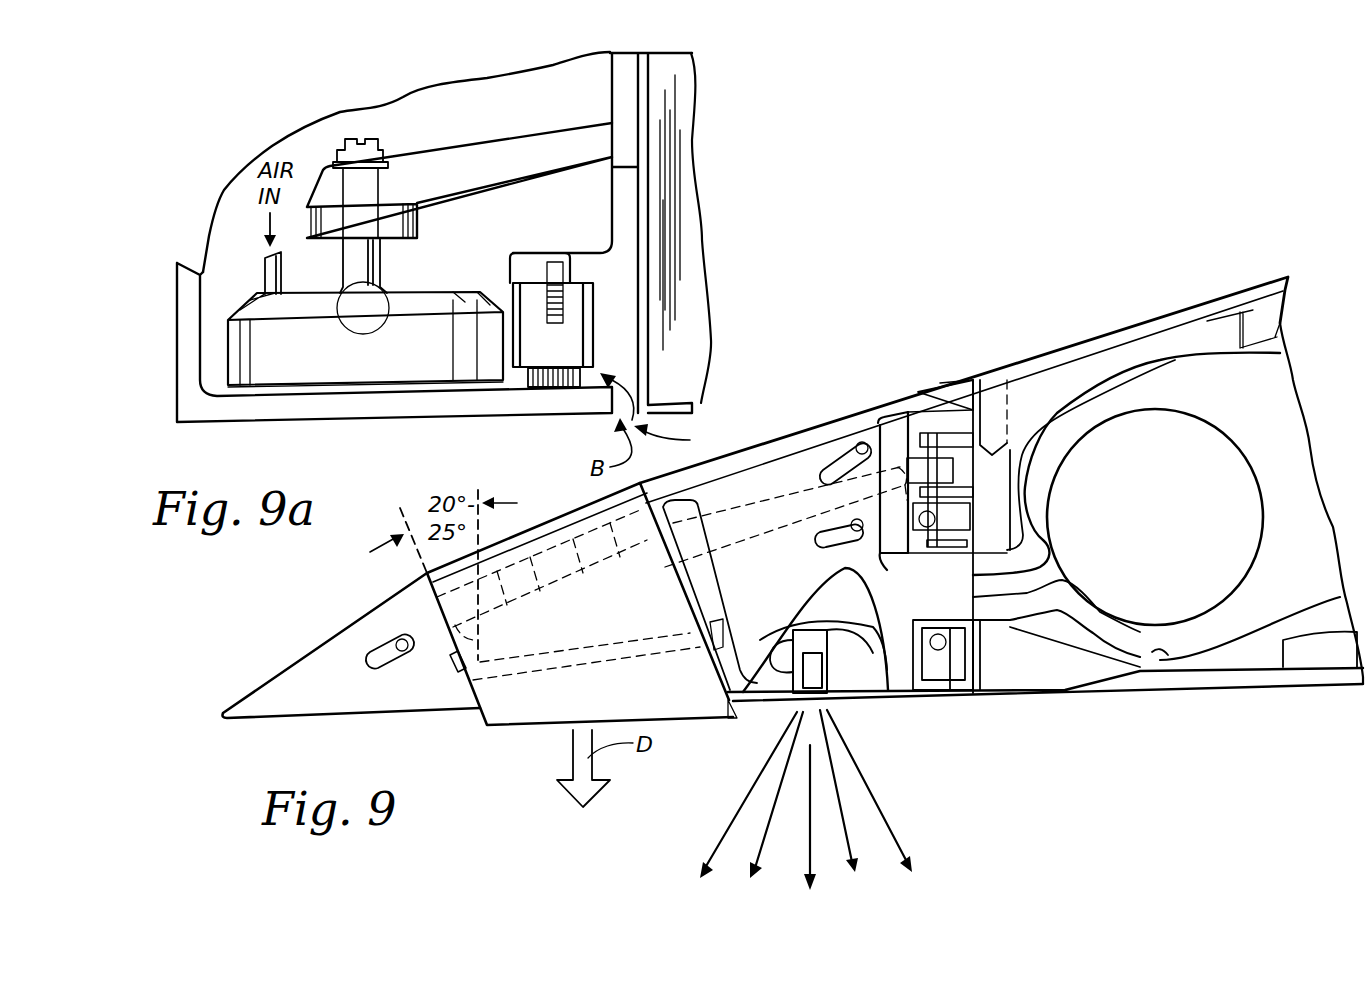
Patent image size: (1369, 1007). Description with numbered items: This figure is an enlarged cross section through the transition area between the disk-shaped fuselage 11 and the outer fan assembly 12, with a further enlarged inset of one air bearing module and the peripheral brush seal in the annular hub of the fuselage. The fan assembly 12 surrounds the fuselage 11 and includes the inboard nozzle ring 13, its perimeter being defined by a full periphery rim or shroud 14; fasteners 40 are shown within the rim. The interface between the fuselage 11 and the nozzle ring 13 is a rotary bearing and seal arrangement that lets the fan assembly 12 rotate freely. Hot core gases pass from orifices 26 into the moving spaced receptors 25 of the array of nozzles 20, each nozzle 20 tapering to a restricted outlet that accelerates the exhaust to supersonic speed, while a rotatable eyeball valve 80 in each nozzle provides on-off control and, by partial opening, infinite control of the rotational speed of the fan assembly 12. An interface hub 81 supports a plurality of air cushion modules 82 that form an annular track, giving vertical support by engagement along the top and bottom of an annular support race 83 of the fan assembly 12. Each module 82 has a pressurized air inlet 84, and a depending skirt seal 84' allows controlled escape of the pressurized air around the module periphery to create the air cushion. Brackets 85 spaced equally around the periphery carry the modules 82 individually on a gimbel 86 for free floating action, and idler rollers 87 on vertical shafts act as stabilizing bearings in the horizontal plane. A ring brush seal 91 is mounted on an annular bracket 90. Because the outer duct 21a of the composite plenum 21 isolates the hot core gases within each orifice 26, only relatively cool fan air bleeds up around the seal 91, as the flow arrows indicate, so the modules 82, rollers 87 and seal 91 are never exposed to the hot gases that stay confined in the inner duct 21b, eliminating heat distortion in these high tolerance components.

In FIG. 9, the fuselage 11 is at (1048, 350).
In FIG. 9, the fan assembly 12 is at (394, 592).
In FIG. 9, the nozzle ring 13 is at (767, 450).
In FIG. 9, the rim 14 is at (290, 670).
In FIG. 9, the nozzle 20 is at (827, 566).
In FIG. 9, the composite plenum 21 is at (1180, 353).
In FIG. 9, the outer duct 21a is at (1152, 652).
In FIG. 9, the inner duct 21b is at (1118, 615).
In FIG. 9, the receptor 25 is at (885, 565).
In FIG. 9, the orifice 26 is at (1003, 607).
In FIG. 9, the fasteners 40 is at (671, 573).
In FIG. 9, the eyeball valve 80 is at (727, 703).
In FIG. 9, the interface hub 81 is at (947, 373).
In FIG. 9A, the air cushion module 82 is at (403, 338).
In FIG. 9, the air cushion module 82 is at (975, 497).
In FIG. 9A, the annular support race 83 is at (190, 362).
In FIG. 9, the annular support race 83 is at (952, 690).
In FIG. 9A, the pressurized air inlet 84 is at (295, 273).
In FIG. 9A, the skirt seal 84' is at (365, 429).
In FIG. 9A, the bracket 85 is at (470, 168).
In FIG. 9A, the gimbel 86 is at (383, 287).
In FIG. 9, the idler roller 87 is at (918, 462).
In FIG. 9A, the annular bracket 90 is at (623, 223).
In FIG. 9A, the ring brush seal 91 is at (553, 377).